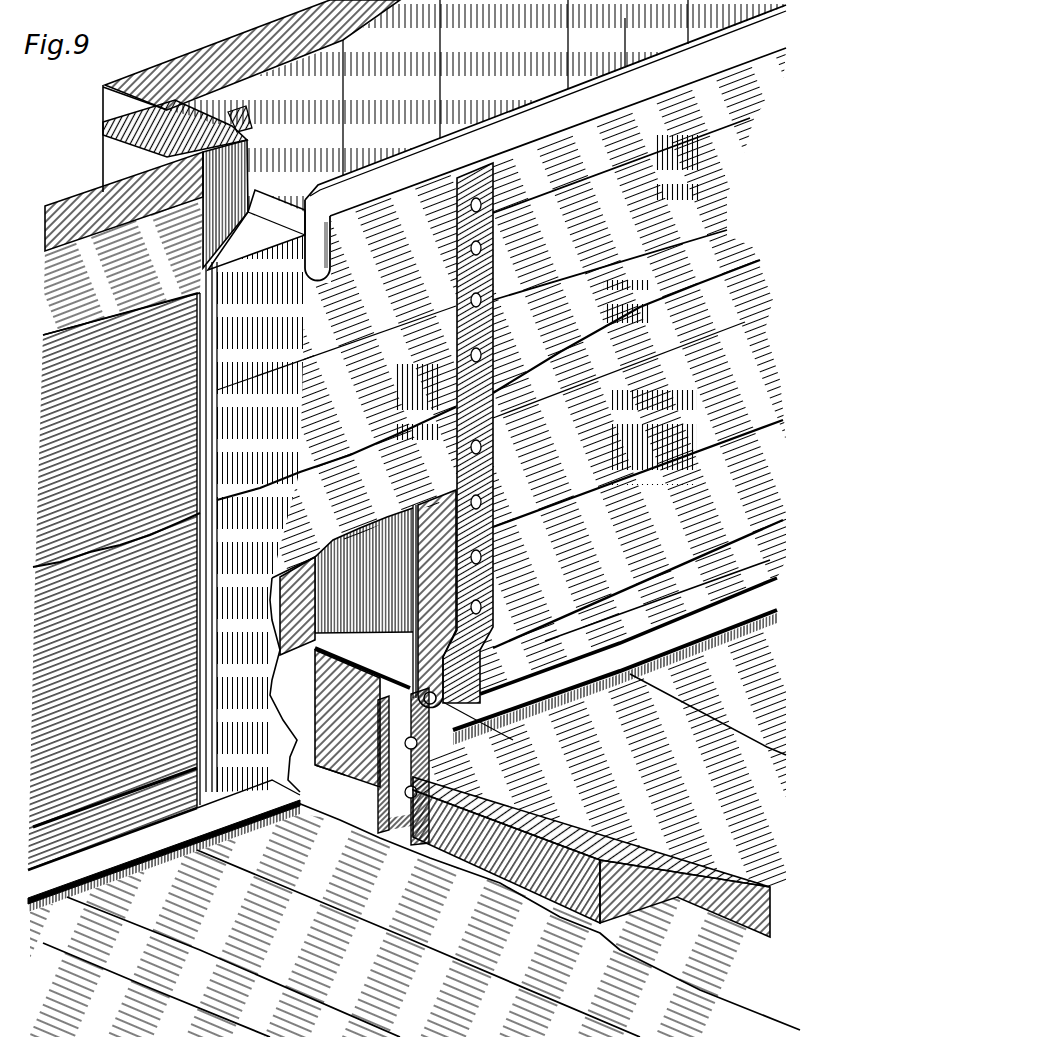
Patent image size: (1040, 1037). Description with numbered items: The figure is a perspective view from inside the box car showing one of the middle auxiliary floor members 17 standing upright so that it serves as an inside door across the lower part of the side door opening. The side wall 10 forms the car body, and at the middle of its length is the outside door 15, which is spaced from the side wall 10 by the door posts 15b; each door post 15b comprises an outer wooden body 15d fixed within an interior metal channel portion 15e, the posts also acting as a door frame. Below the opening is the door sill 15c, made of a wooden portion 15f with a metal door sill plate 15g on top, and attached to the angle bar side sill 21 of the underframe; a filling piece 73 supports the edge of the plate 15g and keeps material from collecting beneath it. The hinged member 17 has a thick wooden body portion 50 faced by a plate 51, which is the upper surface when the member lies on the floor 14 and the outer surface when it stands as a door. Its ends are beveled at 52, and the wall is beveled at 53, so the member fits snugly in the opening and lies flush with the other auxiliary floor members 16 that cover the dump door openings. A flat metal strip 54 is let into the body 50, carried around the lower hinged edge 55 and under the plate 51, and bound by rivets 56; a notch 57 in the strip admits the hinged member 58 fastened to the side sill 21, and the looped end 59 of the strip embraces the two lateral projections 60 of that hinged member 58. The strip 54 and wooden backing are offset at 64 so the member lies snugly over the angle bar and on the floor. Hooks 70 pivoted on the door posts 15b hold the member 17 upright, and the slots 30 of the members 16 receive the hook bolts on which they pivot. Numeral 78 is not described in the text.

The side wall 10 is at (97, 208).
The dump door 14 is at (327, 937).
The outside door 15 is at (230, 52).
The door post 15b is at (99, 127).
The door sill 15c is at (341, 770).
The wooden body of door post 15d is at (99, 136).
The interior metal portion of door post 15e is at (224, 132).
The wooden portion of door sill 15f is at (290, 685).
The door sill plate 15g is at (358, 663).
The auxiliary floor member 16 is at (114, 581).
The middle auxiliary floor member 17 is at (501, 372).
The side sill 21 is at (380, 811).
The elongated aperture 30 is at (434, 599).
The body portion 50 is at (545, 110).
The plate 51 is at (506, 103).
The beveled end 52 is at (262, 256).
The beveled edge of wall 53 is at (242, 163).
The flat metal strip 54 is at (491, 222).
The hinged edge 55 is at (556, 706).
The rivets 56 is at (426, 267).
The notch 57 is at (503, 758).
The hinged member 58 is at (409, 766).
The looped end 59 is at (466, 789).
The lateral projections 60 is at (493, 671).
The offset 64 is at (449, 677).
The hook 70 is at (331, 250).
The filling piece 73 is at (347, 718).
The sill plate 78 is at (240, 790).